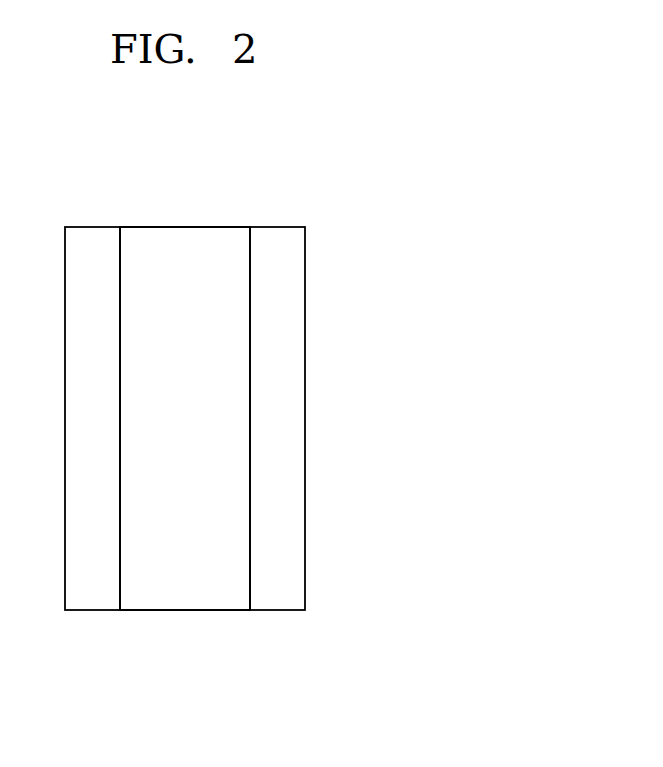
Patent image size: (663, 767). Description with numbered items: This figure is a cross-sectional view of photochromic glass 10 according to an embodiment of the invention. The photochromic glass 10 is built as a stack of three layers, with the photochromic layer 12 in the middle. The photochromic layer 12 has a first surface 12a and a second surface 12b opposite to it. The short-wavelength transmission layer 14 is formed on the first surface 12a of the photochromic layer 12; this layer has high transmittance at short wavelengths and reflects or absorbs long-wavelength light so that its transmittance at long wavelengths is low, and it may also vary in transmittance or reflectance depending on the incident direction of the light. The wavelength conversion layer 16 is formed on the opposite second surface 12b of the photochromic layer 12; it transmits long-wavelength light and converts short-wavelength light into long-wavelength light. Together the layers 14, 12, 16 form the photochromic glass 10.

The photochromic glass 10 is at (353, 152).
The photochromic layer 12 is at (183, 235).
The first surface 12a is at (120, 597).
The second surface 12b is at (250, 597).
The short-wavelength transmission layer 14 is at (92, 235).
The wavelength conversion layer 16 is at (277, 235).